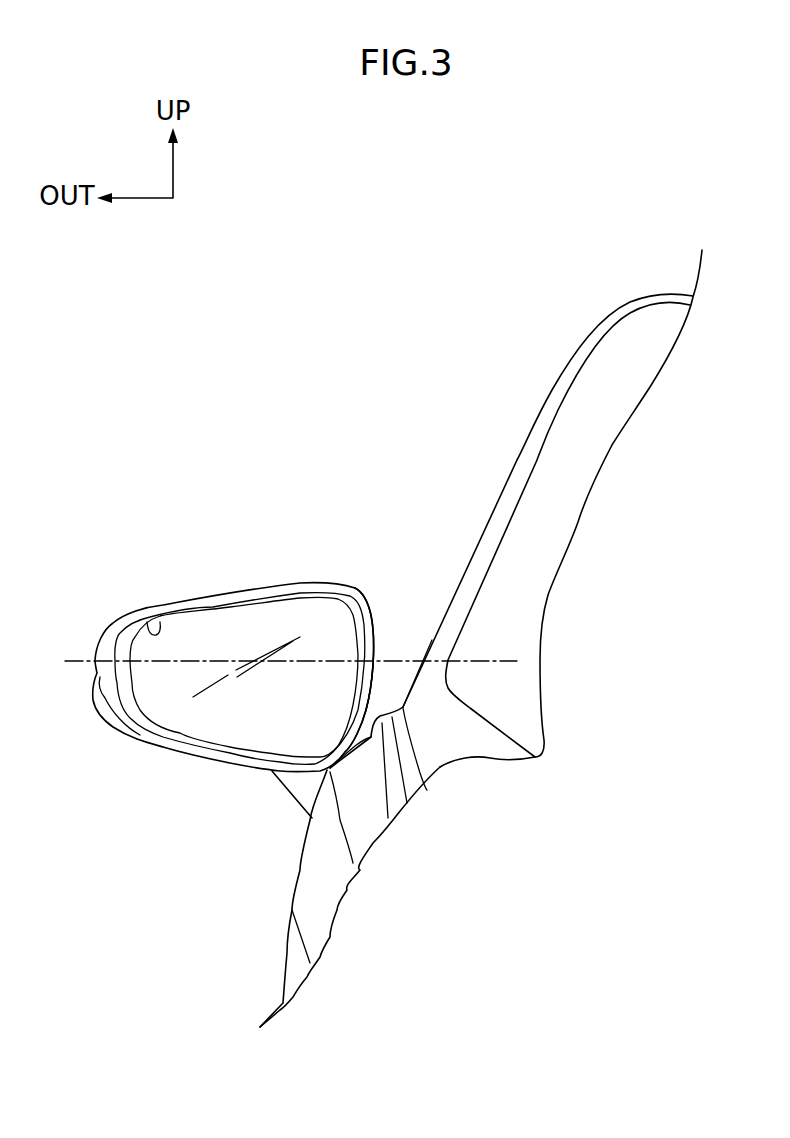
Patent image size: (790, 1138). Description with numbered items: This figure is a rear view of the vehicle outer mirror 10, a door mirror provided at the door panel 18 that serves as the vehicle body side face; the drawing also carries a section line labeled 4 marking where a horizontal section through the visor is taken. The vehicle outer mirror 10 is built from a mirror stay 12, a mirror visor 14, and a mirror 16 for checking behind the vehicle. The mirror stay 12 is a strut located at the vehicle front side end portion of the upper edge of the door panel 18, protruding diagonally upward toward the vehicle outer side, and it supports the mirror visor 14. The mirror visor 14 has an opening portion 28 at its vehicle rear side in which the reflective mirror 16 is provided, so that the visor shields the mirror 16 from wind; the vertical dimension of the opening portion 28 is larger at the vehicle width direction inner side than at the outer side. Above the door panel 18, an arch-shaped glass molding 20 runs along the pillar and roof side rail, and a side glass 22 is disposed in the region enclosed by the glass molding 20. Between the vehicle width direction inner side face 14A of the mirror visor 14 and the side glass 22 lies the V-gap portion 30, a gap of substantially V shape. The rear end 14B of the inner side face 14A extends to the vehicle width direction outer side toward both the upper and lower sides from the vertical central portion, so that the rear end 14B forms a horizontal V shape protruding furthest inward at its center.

The section line 4- 4 is at (512, 650).
The vehicle outer mirror 10 is at (290, 407).
The mirror stay 12 is at (297, 797).
The mirror visor 14 is at (257, 583).
The vehicle width direction inner side face 14A is at (347, 592).
The rear end 14B is at (392, 637).
The mirror 16 is at (208, 628).
The door panel 18 is at (323, 869).
The glass molding 20 is at (543, 408).
The side glass 22 is at (537, 495).
The opening portion 28 is at (157, 625).
The V-gap portion 30 is at (413, 580).